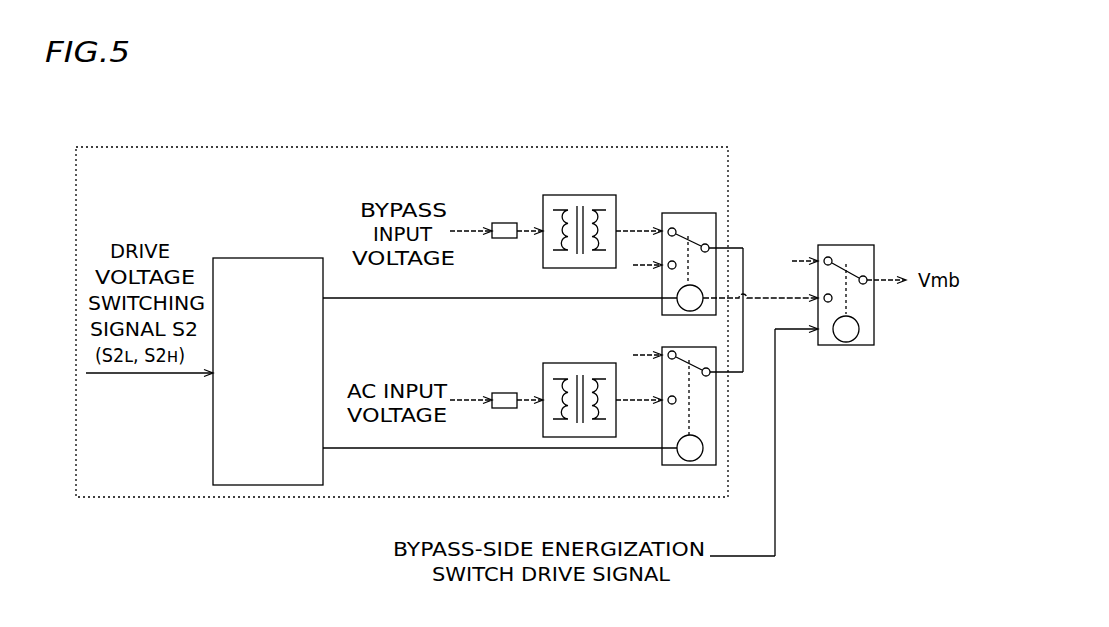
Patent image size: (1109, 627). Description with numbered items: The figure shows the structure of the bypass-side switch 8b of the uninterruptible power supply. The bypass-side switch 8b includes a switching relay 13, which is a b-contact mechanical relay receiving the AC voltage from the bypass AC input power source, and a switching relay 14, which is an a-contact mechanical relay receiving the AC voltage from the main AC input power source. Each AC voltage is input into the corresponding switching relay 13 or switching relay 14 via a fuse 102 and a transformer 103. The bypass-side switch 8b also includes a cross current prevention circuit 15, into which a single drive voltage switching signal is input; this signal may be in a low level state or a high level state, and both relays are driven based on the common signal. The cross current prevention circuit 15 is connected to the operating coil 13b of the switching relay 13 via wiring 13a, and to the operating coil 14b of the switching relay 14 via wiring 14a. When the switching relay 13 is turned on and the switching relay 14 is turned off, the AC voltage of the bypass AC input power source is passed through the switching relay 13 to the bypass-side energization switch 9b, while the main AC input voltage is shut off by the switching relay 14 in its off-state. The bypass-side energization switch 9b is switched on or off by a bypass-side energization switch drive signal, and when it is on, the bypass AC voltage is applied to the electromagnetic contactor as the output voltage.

The bypass-side switch 8b is at (182, 146).
The cross current prevention circuit 15 is at (262, 257).
The fuse 102 is at (500, 222).
The transformer 103 is at (580, 195).
The switching relay 13 is at (655, 249).
The wiring 13a is at (508, 300).
The operating coil 13b is at (662, 293).
The switching relay 14 is at (705, 389).
The wiring 14a is at (506, 450).
The operating coil 14b is at (706, 438).
The bypass-side energization switch 9b is at (856, 245).